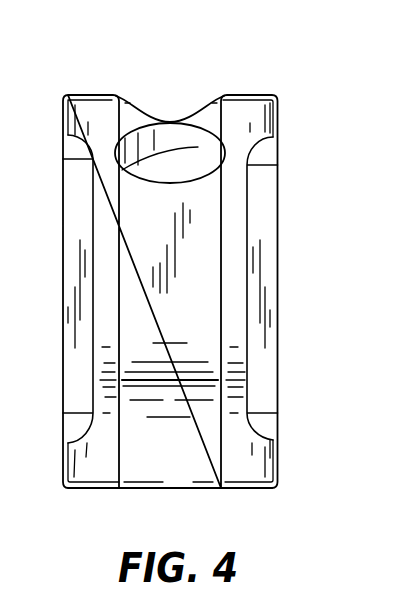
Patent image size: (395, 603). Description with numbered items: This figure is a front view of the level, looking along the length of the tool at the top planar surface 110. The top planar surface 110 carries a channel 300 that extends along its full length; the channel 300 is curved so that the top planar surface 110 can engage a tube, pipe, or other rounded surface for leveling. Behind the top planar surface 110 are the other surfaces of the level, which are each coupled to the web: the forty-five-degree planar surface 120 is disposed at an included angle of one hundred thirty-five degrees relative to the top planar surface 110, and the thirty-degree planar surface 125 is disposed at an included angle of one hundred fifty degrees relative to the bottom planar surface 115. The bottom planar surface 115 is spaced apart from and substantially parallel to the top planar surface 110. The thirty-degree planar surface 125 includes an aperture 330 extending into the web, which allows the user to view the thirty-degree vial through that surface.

The top planar surface 110 is at (97, 95).
The channel 300 is at (174, 92).
The aperture 330 is at (194, 155).
The 45-degree planar surface 120 is at (177, 298).
The 30-degree planar surface 125 is at (177, 445).
The bottom planar surface 115 is at (253, 489).